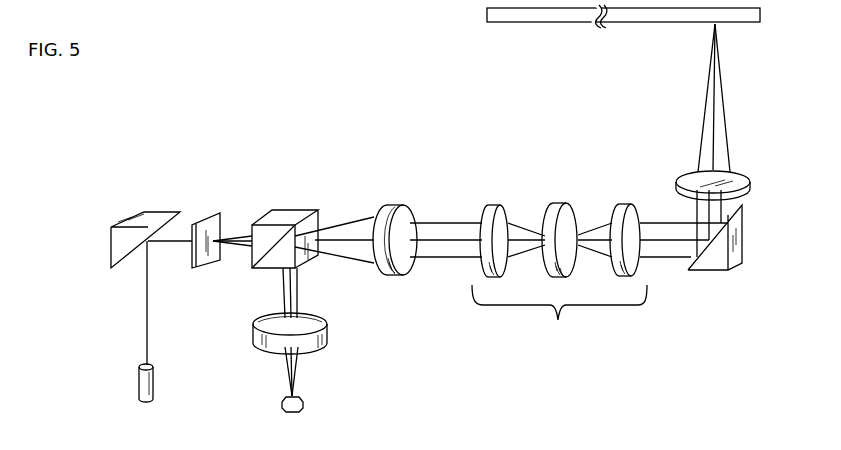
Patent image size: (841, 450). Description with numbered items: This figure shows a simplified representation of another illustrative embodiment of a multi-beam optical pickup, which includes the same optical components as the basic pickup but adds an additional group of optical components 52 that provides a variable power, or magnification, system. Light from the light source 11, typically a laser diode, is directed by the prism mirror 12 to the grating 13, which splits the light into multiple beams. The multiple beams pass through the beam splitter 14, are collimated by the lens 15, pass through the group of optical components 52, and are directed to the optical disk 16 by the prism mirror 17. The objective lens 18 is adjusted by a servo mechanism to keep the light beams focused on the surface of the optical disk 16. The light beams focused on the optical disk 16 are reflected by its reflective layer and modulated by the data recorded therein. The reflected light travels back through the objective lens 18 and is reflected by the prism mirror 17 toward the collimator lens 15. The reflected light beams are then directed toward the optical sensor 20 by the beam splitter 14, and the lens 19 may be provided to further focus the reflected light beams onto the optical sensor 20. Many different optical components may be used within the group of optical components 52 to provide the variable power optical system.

The light source 11 is at (139, 380).
The prism mirror 12 is at (142, 213).
The grating 13 is at (217, 212).
The beam splitter 14 is at (300, 212).
The lens 15 is at (388, 205).
The optical disk 16 is at (542, 22).
The prism mirror 17 is at (723, 272).
The objective lens 18 is at (677, 183).
The lens 19 is at (327, 335).
The optical sensor 20 is at (305, 405).
The group of optical components 52 is at (559, 279).